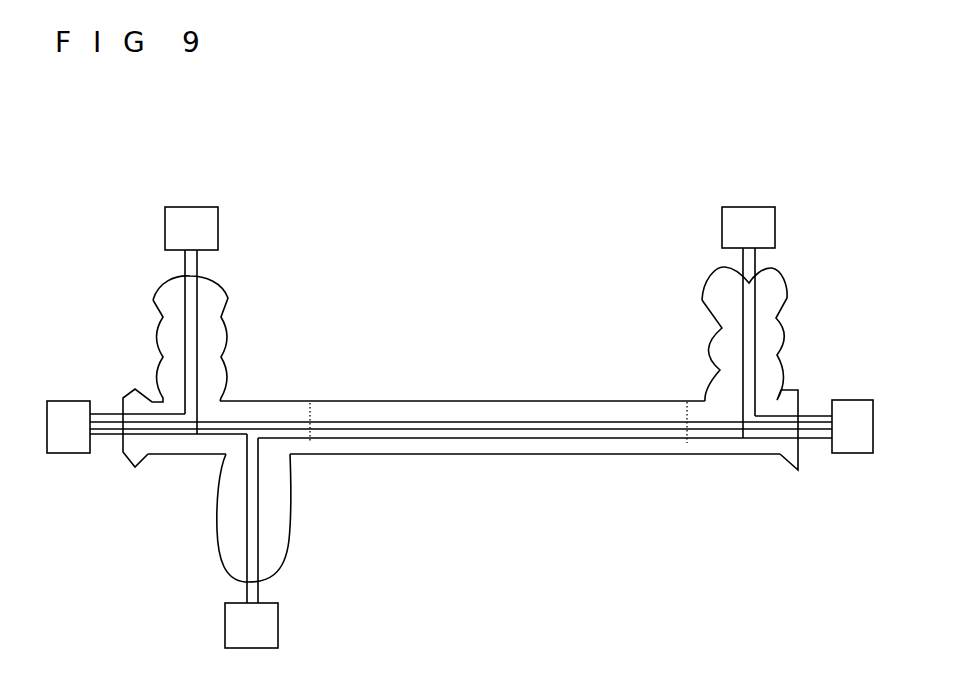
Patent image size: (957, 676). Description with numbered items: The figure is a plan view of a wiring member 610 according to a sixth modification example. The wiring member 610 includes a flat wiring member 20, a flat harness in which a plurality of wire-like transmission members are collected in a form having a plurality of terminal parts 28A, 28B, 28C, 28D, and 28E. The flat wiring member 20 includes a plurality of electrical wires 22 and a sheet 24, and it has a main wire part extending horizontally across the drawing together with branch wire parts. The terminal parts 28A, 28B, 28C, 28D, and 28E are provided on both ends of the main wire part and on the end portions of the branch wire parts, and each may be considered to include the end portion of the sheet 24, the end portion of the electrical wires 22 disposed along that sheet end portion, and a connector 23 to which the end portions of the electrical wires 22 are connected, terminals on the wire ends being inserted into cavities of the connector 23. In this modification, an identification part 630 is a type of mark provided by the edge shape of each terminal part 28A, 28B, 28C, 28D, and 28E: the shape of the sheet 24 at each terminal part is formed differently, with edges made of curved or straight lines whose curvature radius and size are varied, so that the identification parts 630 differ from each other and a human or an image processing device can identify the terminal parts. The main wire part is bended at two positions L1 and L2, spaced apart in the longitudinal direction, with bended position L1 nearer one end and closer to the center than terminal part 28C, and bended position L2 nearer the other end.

The wiring member 610 is at (568, 229).
The flat wiring member 20 is at (452, 400).
The sheet 24 is at (262, 418).
The electrical wires 22 is at (247, 537).
The connector 23 is at (220, 230).
The terminal part 28A is at (122, 440).
The terminal part 28B is at (200, 277).
The terminal part 28C is at (263, 583).
The terminal part 28D is at (768, 268).
The terminal part 28E is at (802, 448).
The identification part 630 is at (228, 299).
The bended position L1 is at (310, 442).
The bended position L2 is at (687, 443).